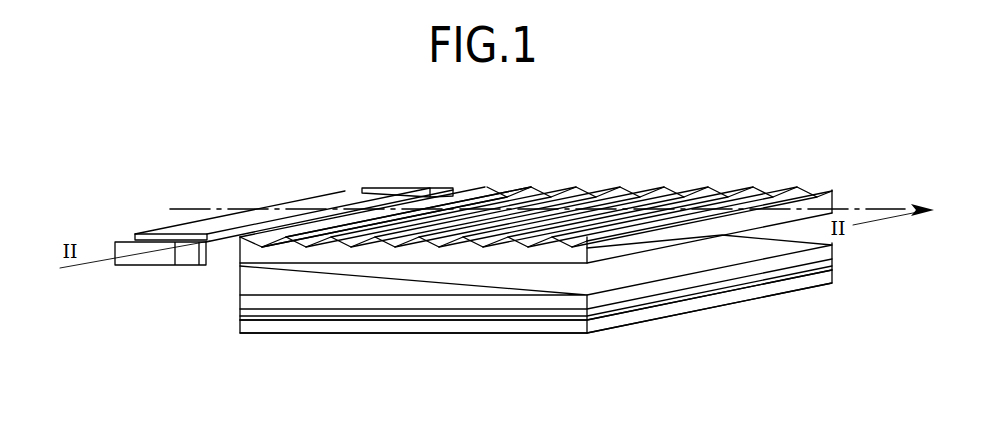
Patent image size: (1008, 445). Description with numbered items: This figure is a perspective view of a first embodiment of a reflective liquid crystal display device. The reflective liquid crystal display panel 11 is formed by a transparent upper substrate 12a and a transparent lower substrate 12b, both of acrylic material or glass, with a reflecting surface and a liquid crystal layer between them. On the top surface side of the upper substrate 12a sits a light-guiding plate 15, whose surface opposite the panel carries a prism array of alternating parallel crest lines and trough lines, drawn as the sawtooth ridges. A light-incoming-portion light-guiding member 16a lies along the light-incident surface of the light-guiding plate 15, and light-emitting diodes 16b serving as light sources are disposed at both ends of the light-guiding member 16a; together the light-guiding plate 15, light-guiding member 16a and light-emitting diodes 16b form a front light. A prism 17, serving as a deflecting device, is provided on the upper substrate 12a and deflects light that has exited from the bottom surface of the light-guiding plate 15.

The reflective liquid crystal display panel 11 is at (262, 302).
The transparent upper substrate 12a is at (437, 302).
The transparent lower substrate 12b is at (523, 328).
The light-guiding plate 15 is at (332, 248).
The light-incoming-portion light-guiding member 16a is at (331, 200).
The light-emitting diodes 16b is at (430, 188).
The prism 17 is at (247, 283).